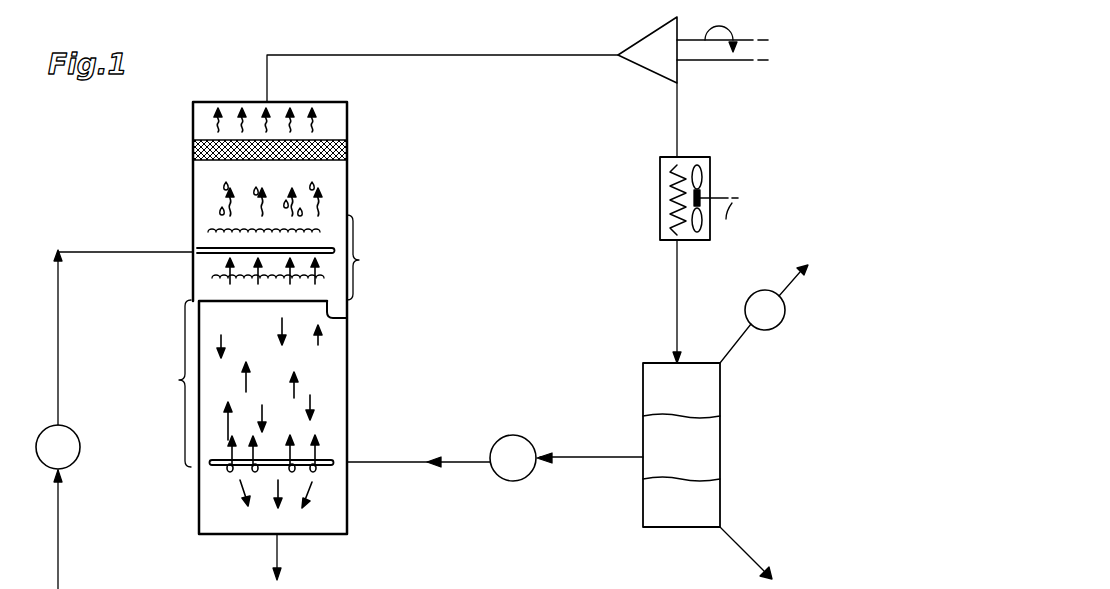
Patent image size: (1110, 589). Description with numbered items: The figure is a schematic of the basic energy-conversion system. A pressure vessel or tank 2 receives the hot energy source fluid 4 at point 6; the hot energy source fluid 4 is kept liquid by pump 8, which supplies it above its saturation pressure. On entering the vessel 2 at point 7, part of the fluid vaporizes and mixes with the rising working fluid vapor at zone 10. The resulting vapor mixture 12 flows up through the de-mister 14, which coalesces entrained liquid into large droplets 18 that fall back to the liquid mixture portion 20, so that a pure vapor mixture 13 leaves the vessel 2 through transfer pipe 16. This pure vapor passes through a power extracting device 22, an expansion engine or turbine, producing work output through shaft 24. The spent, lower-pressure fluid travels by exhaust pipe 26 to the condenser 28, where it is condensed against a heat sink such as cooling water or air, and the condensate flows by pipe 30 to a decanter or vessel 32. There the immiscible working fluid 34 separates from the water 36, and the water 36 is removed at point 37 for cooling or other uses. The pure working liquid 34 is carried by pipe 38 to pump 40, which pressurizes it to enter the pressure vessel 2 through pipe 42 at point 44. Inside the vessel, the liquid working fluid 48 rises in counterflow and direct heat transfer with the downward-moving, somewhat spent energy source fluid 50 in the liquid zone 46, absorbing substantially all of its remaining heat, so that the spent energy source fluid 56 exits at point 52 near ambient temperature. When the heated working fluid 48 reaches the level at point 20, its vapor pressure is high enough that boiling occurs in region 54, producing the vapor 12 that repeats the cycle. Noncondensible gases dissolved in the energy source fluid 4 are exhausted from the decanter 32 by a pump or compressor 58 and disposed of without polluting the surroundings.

The pressure vessel 2 is at (348, 382).
The hot energy source fluid 4 is at (62, 513).
The inlet point 6 is at (190, 257).
The entry point 7 is at (300, 250).
The pump 8 is at (72, 463).
The mixing zone 10 is at (212, 234).
The vapor mixture 12 is at (322, 206).
The pure vapor mixture 13 is at (345, 118).
The de-mister 14 is at (345, 146).
The transfer pipe 16 is at (370, 42).
The large droplets 18 is at (316, 181).
The liquid mixture portion 20 is at (348, 322).
The power extracting device 22 is at (682, 24).
The shaft 24 is at (747, 40).
The exhaust pipe 26 is at (680, 118).
The condenser 28 is at (660, 197).
The pipe 30 is at (680, 298).
The decanter vessel 32 is at (642, 386).
The working fluid 34 is at (716, 449).
The water 36 is at (718, 502).
The water removal point 37 is at (750, 552).
The pipe 38 is at (549, 465).
The pump 40 is at (498, 442).
The pipe 42 is at (420, 466).
The working fluid entry point 44 is at (326, 459).
The liquid zone 46 is at (143, 383).
The liquid working fluid 48 is at (318, 357).
The spent energy source fluid 50 is at (262, 413).
The exit point 52 is at (282, 556).
The boiling region 54 is at (409, 257).
The spent energy source fluid 56 is at (312, 481).
The pump or compressor 58 is at (757, 331).